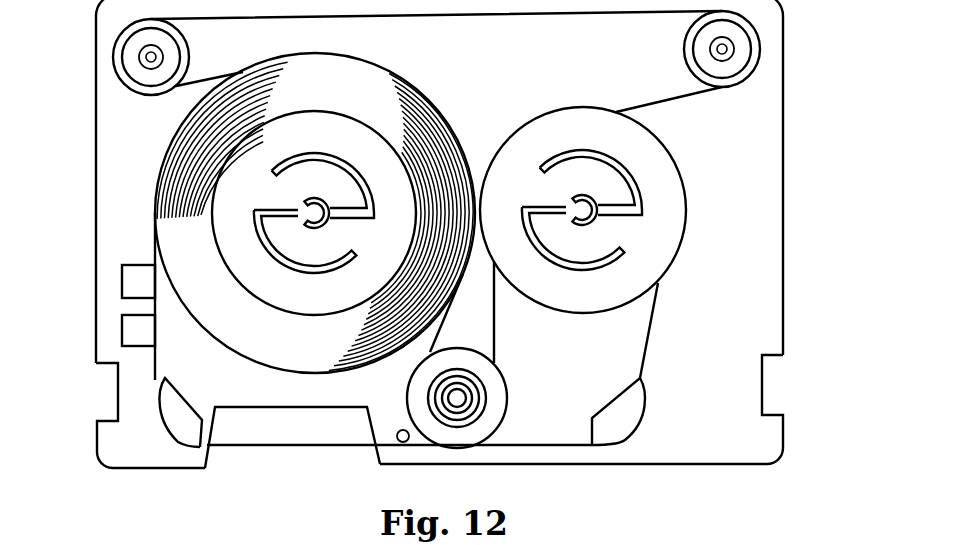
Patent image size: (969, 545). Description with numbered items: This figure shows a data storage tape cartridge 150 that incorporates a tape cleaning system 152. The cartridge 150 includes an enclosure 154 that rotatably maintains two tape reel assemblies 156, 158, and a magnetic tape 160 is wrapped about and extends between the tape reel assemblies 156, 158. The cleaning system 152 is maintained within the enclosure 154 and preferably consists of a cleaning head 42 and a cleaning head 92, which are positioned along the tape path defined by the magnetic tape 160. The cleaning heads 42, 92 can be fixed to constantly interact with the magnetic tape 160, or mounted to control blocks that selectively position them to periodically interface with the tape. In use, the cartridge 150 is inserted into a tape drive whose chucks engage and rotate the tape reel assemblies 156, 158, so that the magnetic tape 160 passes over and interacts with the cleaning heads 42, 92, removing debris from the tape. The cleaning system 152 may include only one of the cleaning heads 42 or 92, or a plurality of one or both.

The data storage tape cartridge 150 is at (800, 97).
The enclosure 154 is at (786, 266).
The tape reel assembly 156 is at (372, 144).
The tape reel assembly 158 is at (570, 141).
The magnetic tape 160 is at (255, 453).
The cleaning head 42 is at (121, 279).
The cleaning head 92 is at (121, 332).
The cleaning system 152 is at (110, 305).